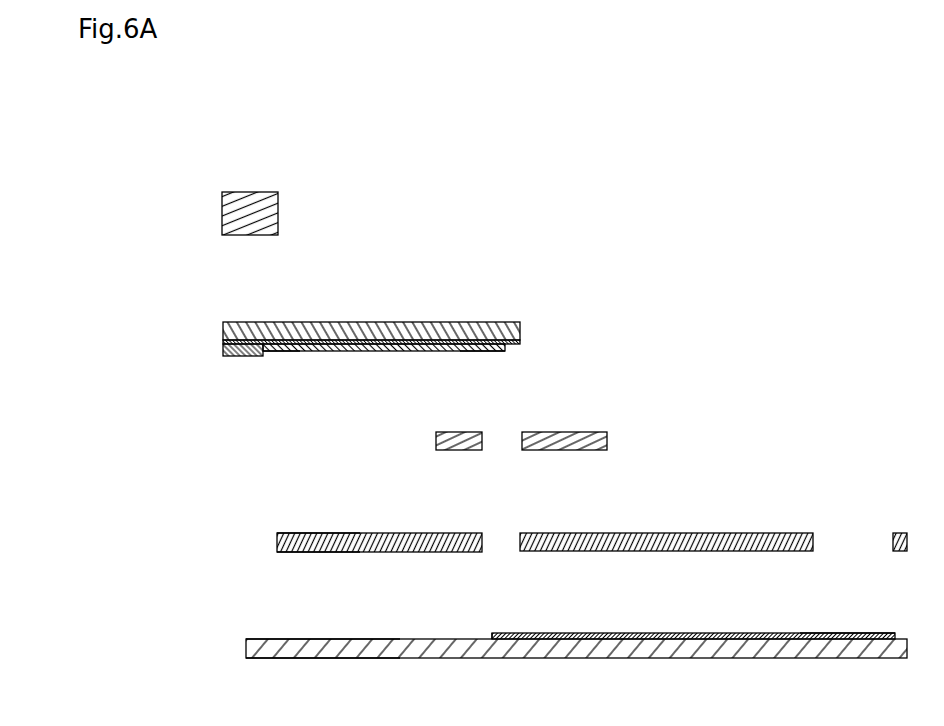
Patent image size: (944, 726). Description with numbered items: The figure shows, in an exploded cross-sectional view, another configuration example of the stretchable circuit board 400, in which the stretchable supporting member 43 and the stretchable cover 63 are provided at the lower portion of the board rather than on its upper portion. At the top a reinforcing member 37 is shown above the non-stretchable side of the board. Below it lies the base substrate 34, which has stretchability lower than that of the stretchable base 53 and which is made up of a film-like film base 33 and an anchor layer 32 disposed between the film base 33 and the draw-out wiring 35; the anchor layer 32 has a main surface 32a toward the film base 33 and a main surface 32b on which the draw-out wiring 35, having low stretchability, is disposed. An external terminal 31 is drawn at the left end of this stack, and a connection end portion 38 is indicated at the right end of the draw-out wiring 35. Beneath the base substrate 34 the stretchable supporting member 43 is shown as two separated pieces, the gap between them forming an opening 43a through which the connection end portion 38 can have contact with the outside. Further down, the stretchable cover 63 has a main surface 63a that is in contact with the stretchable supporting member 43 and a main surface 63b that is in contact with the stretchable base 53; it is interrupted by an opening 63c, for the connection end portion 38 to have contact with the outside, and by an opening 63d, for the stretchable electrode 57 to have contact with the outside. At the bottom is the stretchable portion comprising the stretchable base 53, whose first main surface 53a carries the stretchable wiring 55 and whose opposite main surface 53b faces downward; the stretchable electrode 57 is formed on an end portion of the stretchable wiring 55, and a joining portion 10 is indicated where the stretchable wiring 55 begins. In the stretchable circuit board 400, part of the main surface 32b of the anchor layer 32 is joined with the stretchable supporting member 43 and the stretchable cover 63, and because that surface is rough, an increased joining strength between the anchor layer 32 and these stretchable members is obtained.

The stretchable circuit board 400 is at (582, 108).
The reinforcing member 37 is at (258, 192).
The base substrate 34 is at (464, 332).
The film base 33 is at (522, 331).
The anchor layer 32 is at (436, 351).
The main surface 32a is at (522, 342).
The main surface 32b is at (506, 349).
The external terminal 31 is at (223, 352).
The draw-out wiring 35 is at (272, 352).
The connection end portion 38 is at (492, 352).
The stretchable supporting member 43 is at (461, 432).
The opening 43a is at (520, 452).
The stretchable cover 63 is at (418, 533).
The main surface 63a is at (315, 533).
The main surface 63b is at (318, 553).
The opening 63c is at (520, 553).
The opening 63d is at (893, 553).
The stretchable base 53 is at (190, 618).
The main surface 53a is at (265, 639).
The main surface 53b is at (265, 658).
The stretchable wiring 55 is at (673, 633).
The joining portion 10 is at (497, 633).
The stretchable electrode 57 is at (863, 633).